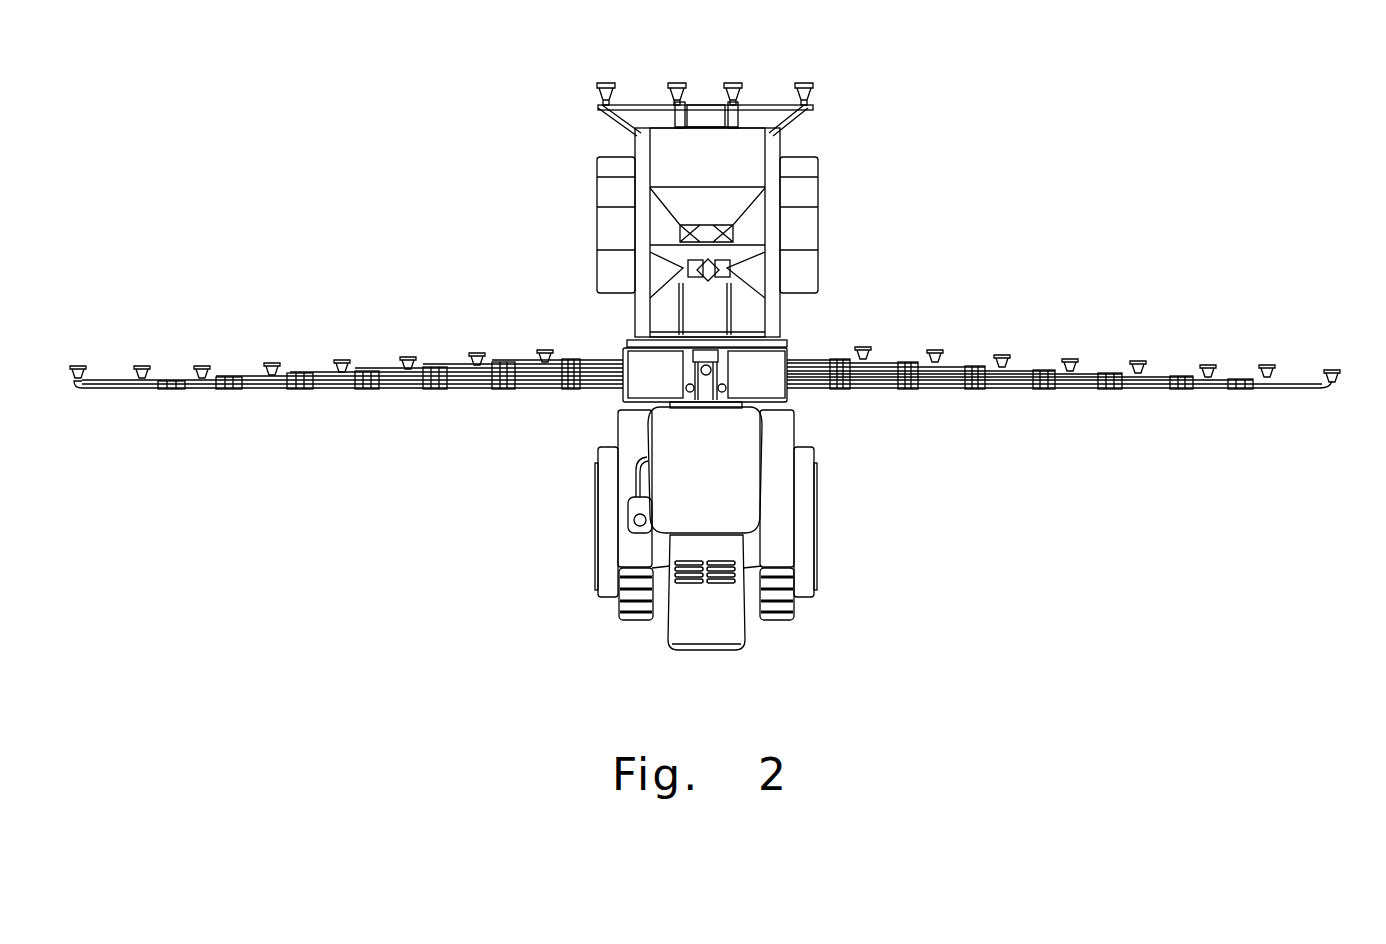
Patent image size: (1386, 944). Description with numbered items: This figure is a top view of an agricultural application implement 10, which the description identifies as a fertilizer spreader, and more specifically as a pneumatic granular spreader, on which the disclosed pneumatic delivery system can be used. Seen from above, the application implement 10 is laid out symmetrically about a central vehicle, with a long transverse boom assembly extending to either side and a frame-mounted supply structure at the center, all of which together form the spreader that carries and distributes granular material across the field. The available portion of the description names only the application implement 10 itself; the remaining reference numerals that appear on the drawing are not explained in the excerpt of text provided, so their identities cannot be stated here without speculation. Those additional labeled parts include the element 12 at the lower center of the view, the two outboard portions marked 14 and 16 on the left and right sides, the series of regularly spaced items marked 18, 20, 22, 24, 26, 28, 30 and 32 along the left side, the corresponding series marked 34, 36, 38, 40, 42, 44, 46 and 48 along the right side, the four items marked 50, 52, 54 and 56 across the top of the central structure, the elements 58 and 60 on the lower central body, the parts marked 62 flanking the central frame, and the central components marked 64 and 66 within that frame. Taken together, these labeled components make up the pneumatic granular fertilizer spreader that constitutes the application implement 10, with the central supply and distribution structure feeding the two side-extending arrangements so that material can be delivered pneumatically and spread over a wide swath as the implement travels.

The agricultural application implement 10 is at (450, 124).
The tractor / vehicle 12 is at (847, 616).
The left boom 14 is at (377, 418).
The right boom 16 is at (1009, 420).
The nozzle 18 is at (547, 349).
The nozzle 20 is at (479, 352).
The nozzle 22 is at (410, 356).
The nozzle 24 is at (344, 359).
The nozzle 26 is at (274, 362).
The nozzle 28 is at (204, 365).
The nozzle 30 is at (144, 365).
The nozzle 32 is at (80, 365).
The nozzle 34 is at (865, 346).
The nozzle 36 is at (937, 349).
The nozzle 38 is at (1004, 354).
The nozzle 40 is at (1072, 358).
The nozzle 42 is at (1140, 360).
The nozzle 44 is at (1210, 364).
The nozzle 46 is at (1269, 364).
The nozzle 48 is at (1334, 369).
The product inlet / hopper fill port 50 is at (605, 82).
The product inlet / hopper fill port 52 is at (677, 82).
The product inlet / hopper fill port 54 is at (733, 82).
The product inlet / hopper fill port 56 is at (804, 82).
The hood 58 is at (696, 616).
The cab 60 is at (728, 467).
The side tank 62 is at (775, 181).
The hopper 64 is at (692, 213).
The metering / valve assembly 66 is at (678, 270).